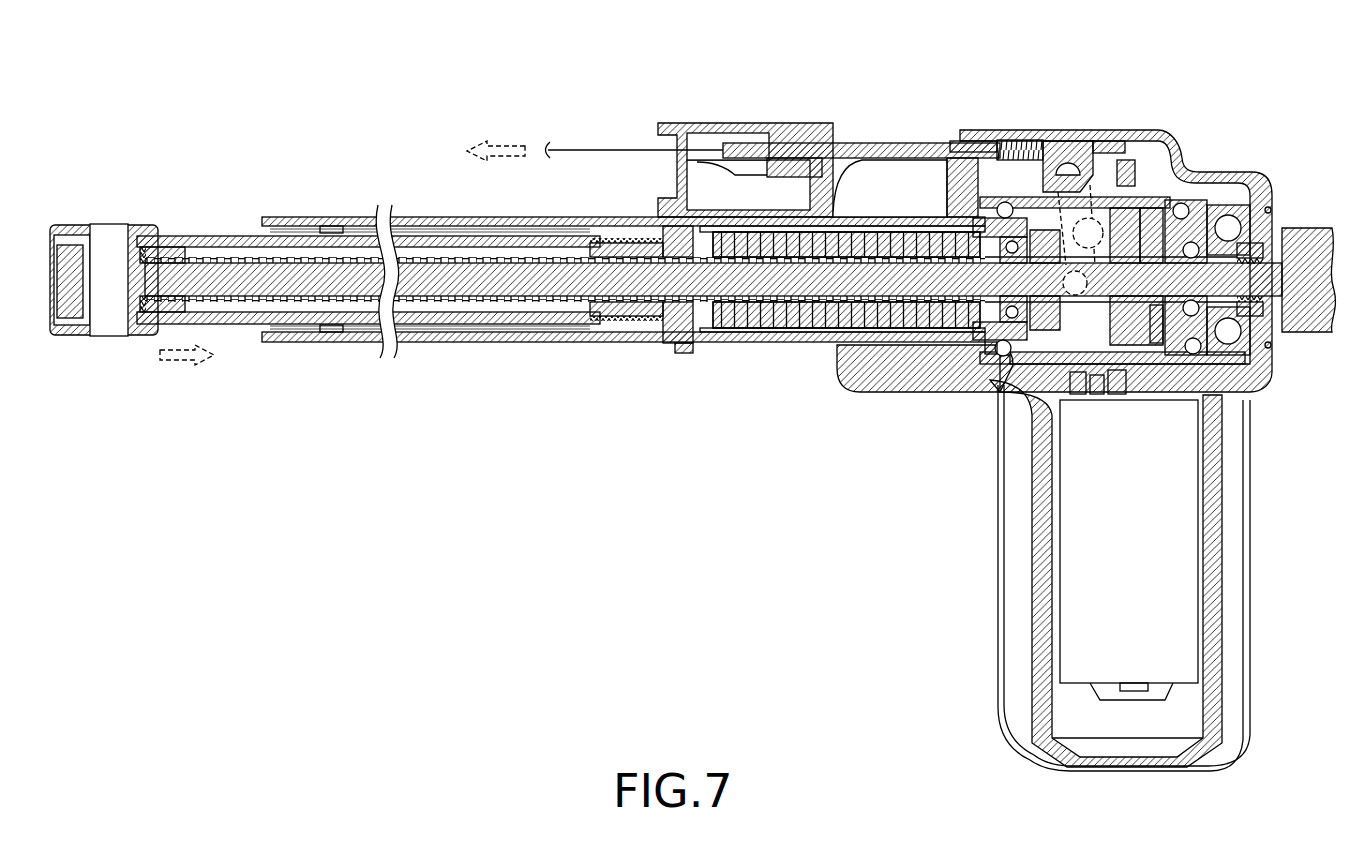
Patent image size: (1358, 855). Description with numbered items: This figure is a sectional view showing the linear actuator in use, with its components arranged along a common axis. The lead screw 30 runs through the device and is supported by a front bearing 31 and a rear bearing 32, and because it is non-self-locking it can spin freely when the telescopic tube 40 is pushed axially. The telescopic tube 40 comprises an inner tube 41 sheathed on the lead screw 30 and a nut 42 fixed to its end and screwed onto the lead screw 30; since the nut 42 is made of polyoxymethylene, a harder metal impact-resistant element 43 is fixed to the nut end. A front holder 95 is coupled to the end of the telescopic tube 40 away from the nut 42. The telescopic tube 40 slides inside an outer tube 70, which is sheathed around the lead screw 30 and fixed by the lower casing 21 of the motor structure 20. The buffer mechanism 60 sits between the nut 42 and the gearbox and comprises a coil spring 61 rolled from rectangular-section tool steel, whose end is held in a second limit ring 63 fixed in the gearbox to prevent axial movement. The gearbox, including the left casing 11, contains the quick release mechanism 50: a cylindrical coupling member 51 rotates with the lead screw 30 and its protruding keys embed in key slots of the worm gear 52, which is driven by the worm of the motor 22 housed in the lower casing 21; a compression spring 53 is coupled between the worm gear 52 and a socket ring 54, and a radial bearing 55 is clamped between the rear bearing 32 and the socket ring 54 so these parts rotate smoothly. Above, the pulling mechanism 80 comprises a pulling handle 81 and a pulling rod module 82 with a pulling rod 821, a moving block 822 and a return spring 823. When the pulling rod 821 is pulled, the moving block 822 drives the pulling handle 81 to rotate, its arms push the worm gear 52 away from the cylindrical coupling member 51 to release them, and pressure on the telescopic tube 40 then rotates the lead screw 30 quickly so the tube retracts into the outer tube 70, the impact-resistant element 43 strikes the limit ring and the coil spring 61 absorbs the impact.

The left casing 11 is at (1140, 200).
The motor structure 20 is at (985, 560).
The lower casing 21 is at (1022, 636).
The motor 22 is at (1082, 566).
The lead screw 30 is at (522, 275).
The front bearing 31 is at (990, 356).
The rear bearing 32 is at (1240, 332).
The telescopic tube 40 is at (248, 352).
The inner tube 41 is at (200, 238).
The nut 42 is at (660, 335).
The impact-resistant element 43 is at (700, 352).
The quick release mechanism 50 is at (1167, 225).
The cylindrical coupling member 51 is at (1037, 240).
The worm gear 52 is at (1095, 386).
The compression spring 53 is at (1160, 310).
The socket ring 54 is at (1192, 240).
The radial bearing 55 is at (1210, 247).
The buffer mechanism 60 is at (775, 330).
The coil spring 61 is at (800, 315).
The second limit ring 63 is at (998, 355).
The outer tube 70 is at (432, 217).
The pulling mechanism 80 is at (1137, 120).
The pulling handle 81 is at (1067, 160).
The pulling rod module 82 is at (1052, 124).
The front holder 95 is at (72, 255).
The pulling rod 821 is at (876, 150).
The moving block 822 is at (1088, 143).
The return spring 823 is at (1025, 143).